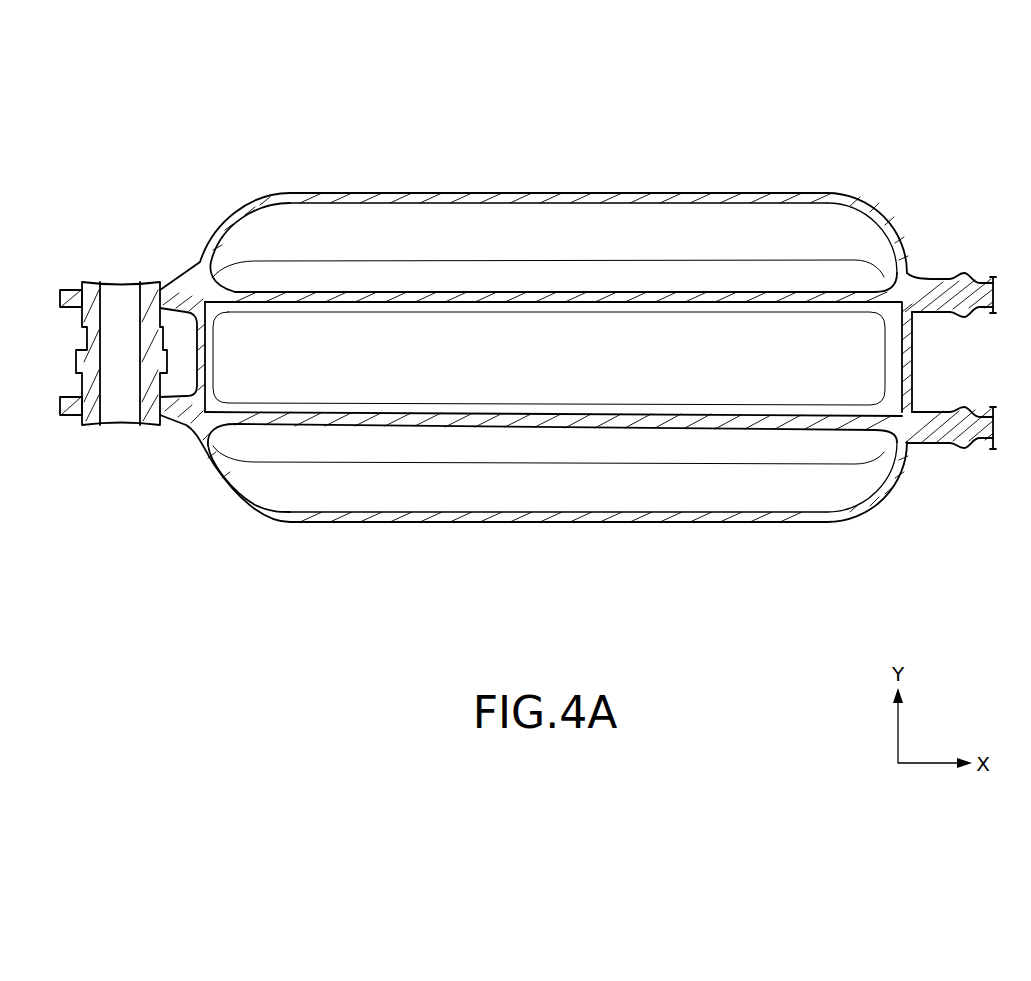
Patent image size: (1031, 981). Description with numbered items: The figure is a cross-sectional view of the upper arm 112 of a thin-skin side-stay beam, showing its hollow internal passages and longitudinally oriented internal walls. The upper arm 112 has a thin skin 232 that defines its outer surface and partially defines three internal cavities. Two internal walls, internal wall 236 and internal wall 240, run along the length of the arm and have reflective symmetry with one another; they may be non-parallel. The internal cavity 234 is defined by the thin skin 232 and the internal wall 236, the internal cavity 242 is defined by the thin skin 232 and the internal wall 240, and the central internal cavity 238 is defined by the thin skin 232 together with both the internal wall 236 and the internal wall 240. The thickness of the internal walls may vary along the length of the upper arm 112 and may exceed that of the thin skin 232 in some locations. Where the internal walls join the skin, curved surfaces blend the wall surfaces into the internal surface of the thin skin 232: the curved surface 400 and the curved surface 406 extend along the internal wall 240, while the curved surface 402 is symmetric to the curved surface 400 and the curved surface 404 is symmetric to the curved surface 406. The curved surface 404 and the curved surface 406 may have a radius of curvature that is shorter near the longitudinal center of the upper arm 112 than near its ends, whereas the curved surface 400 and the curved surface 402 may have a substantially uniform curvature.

The upper arm 112 is at (606, 137).
The thin skin 232 is at (763, 518).
The internal cavity 234 is at (847, 223).
The internal wall 236 is at (810, 295).
The internal cavity 238 is at (863, 330).
The internal wall 240 is at (857, 427).
The internal cavity 242 is at (847, 480).
The curved surface 400 is at (437, 442).
The curved surface 402 is at (393, 282).
The curved surface 404 is at (437, 303).
The curved surface 406 is at (545, 410).